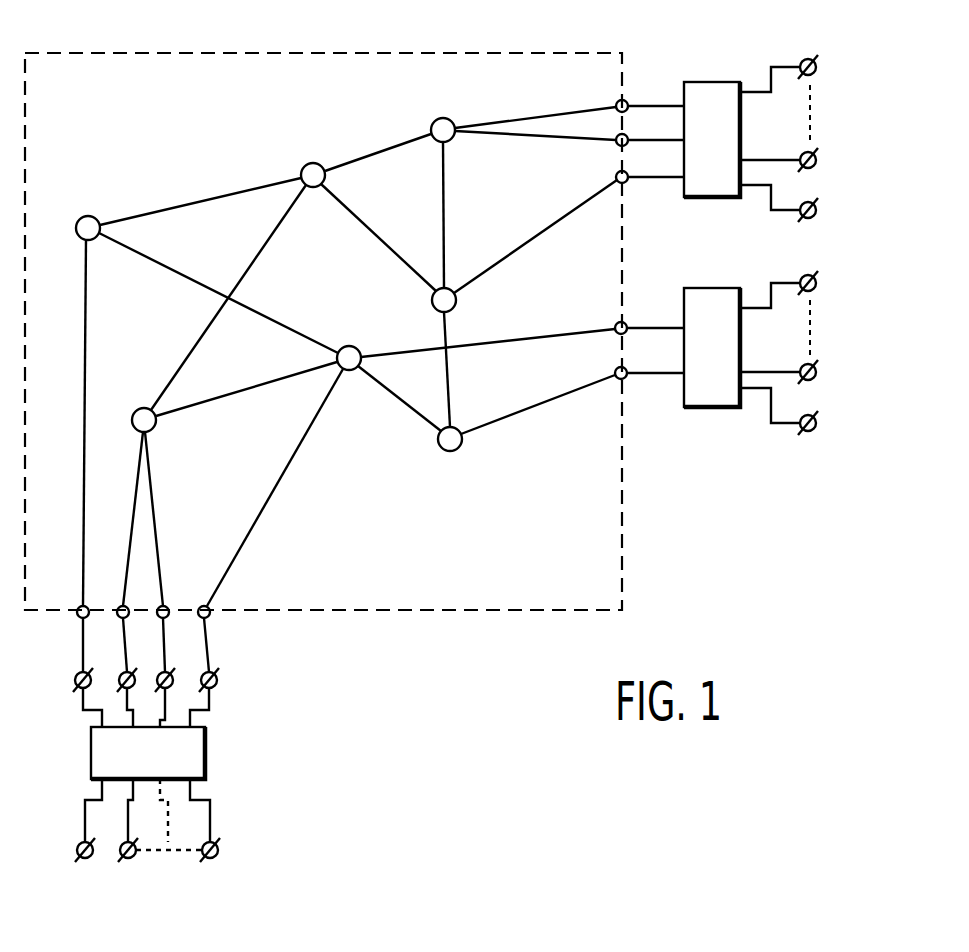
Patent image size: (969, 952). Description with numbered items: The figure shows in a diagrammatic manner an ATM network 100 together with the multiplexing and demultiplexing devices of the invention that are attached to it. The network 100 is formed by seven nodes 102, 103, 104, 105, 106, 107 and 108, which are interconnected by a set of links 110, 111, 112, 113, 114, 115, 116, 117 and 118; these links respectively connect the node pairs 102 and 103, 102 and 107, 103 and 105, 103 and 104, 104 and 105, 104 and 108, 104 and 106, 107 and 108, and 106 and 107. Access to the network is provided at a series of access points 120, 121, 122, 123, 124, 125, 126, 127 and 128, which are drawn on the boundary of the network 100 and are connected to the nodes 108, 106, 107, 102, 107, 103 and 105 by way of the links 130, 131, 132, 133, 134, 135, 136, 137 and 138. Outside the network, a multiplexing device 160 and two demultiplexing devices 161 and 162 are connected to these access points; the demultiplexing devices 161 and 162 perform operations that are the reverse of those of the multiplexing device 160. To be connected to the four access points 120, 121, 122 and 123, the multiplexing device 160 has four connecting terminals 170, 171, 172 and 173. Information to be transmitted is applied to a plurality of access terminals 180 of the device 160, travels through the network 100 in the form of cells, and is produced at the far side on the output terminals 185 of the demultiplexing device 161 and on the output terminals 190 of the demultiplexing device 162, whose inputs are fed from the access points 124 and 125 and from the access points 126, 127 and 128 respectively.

The ATM network 100 is at (624, 548).
The node 102 is at (458, 450).
The node 103 is at (433, 306).
The node 104 is at (307, 165).
The node 105 is at (436, 120).
The node 106 is at (149, 409).
The node 107 is at (343, 347).
The node 108 is at (88, 216).
The link 110 is at (449, 398).
The link 111 is at (408, 405).
The link 112 is at (442, 230).
The link 113 is at (372, 232).
The link 114 is at (385, 150).
The link 115 is at (220, 197).
The link 116 is at (254, 260).
The link 117 is at (172, 270).
The link 118 is at (205, 402).
The access point 120 is at (80, 605).
The access point 121 is at (119, 606).
The access point 122 is at (166, 606).
The access point 123 is at (210, 605).
The access point 124 is at (623, 381).
The access point 125 is at (615, 325).
The access point 126 is at (625, 184).
The access point 127 is at (616, 146).
The access point 128 is at (627, 102).
The link 130 is at (84, 398).
The link 131 is at (135, 510).
The link 132 is at (153, 506).
The link 133 is at (275, 490).
The link 134 is at (540, 405).
The link 135 is at (520, 340).
The link 136 is at (532, 240).
The link 137 is at (520, 135).
The link 138 is at (548, 116).
The multiplexing device 160 is at (206, 753).
The demultiplexing device 161 is at (700, 288).
The demultiplexing device 162 is at (710, 82).
The connecting terminal 170 is at (75, 676).
The connecting terminal 171 is at (119, 676).
The connecting terminal 172 is at (172, 674).
The connecting terminal 173 is at (217, 679).
The access terminals 180 is at (222, 892).
The output terminals 185 is at (801, 276).
The output terminals 190 is at (768, 232).